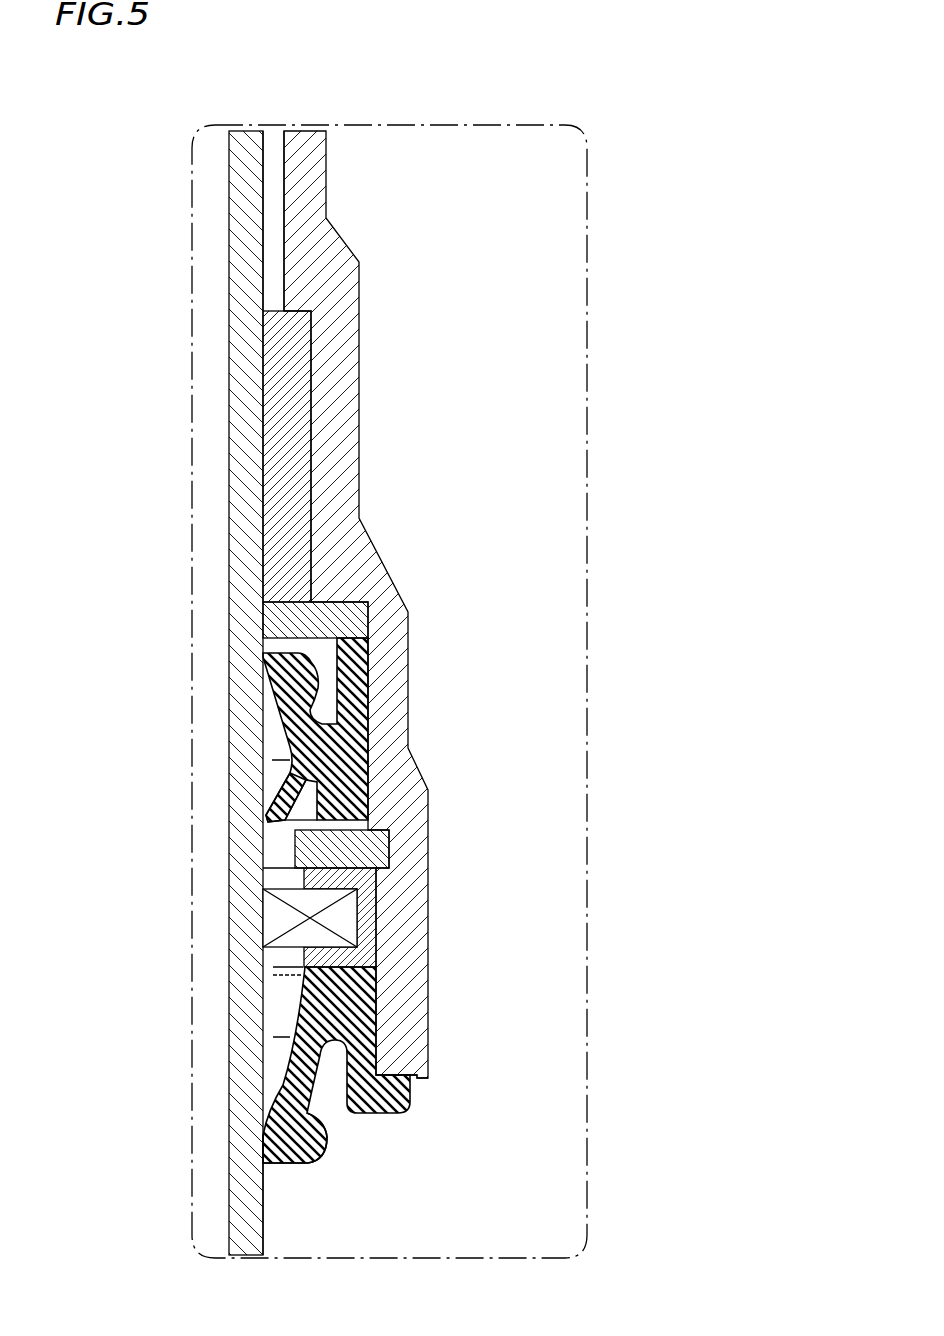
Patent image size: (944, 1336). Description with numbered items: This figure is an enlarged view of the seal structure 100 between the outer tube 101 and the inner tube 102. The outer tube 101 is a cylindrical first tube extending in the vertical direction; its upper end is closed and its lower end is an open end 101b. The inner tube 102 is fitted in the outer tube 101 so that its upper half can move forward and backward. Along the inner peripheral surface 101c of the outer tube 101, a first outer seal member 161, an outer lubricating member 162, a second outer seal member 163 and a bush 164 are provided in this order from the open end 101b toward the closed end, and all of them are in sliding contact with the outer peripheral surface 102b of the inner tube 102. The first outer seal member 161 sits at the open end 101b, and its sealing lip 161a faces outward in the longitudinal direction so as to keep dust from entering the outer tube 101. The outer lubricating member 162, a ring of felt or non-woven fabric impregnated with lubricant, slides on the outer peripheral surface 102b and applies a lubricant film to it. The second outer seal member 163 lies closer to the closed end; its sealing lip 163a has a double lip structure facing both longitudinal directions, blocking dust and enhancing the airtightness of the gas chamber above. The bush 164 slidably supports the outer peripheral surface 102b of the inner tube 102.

The mounting structure 100 is at (122, 140).
The outer tube 101 is at (360, 371).
The open end 101b is at (418, 1080).
The inner peripheral surface 101c is at (281, 162).
The inner tube 102 is at (224, 1228).
The outer peripheral surface 102b is at (263, 1232).
The first outer seal member 161 is at (292, 1018).
The sealing lip 161a is at (278, 1150).
The outer lubricating member 162 is at (275, 913).
The second outer seal member 163 is at (281, 725).
The sealing lip 163a is at (265, 800).
The bush 164 is at (283, 434).